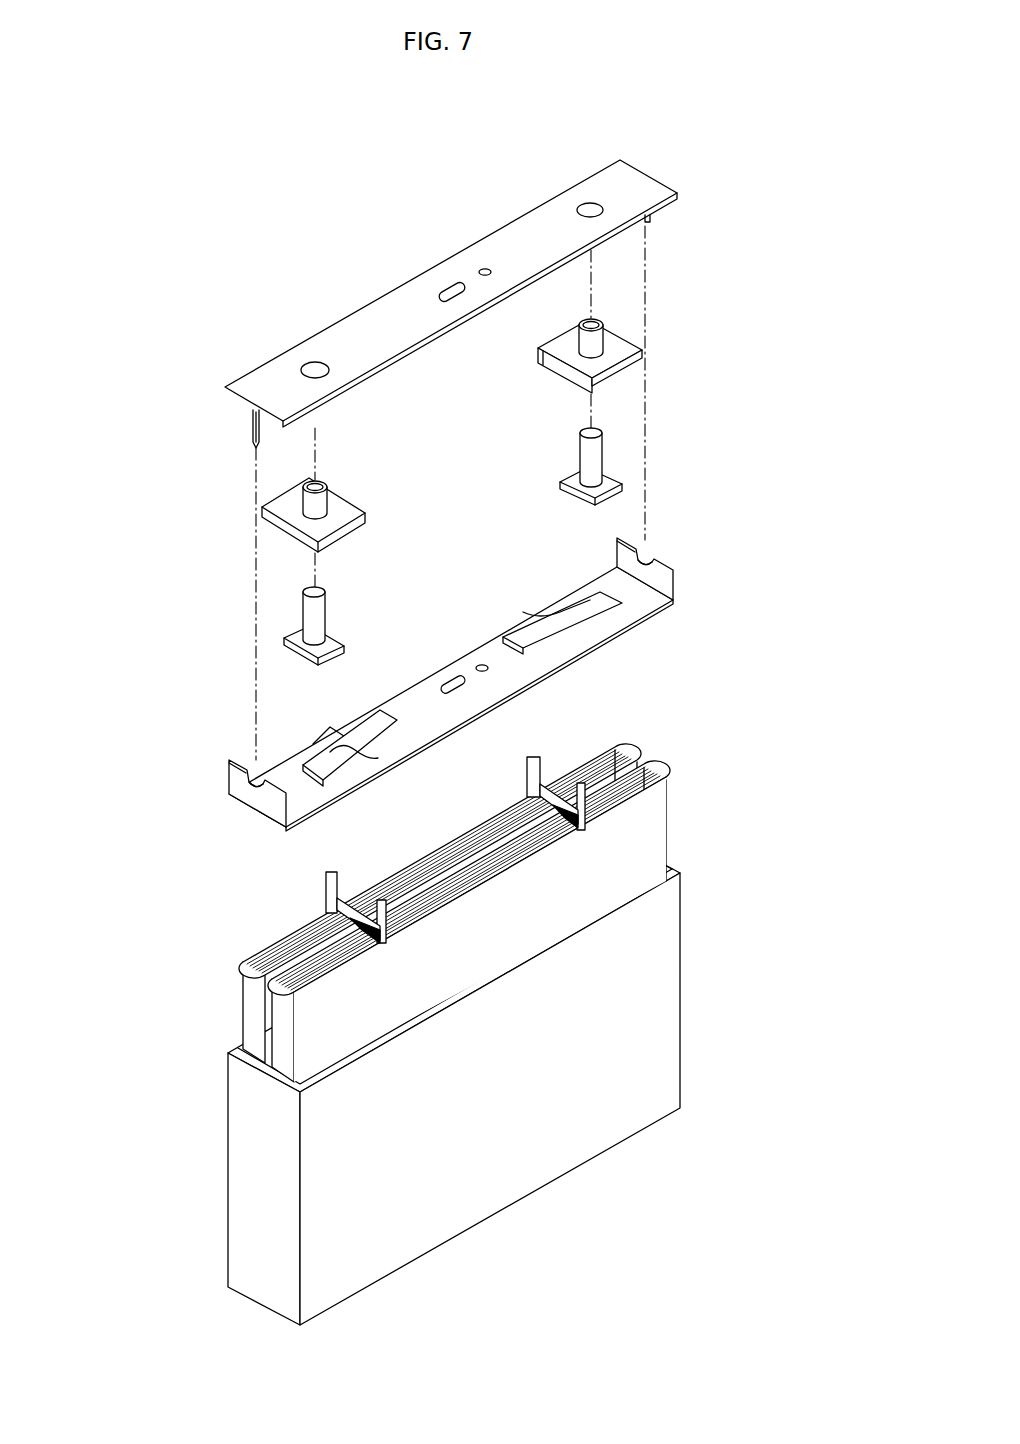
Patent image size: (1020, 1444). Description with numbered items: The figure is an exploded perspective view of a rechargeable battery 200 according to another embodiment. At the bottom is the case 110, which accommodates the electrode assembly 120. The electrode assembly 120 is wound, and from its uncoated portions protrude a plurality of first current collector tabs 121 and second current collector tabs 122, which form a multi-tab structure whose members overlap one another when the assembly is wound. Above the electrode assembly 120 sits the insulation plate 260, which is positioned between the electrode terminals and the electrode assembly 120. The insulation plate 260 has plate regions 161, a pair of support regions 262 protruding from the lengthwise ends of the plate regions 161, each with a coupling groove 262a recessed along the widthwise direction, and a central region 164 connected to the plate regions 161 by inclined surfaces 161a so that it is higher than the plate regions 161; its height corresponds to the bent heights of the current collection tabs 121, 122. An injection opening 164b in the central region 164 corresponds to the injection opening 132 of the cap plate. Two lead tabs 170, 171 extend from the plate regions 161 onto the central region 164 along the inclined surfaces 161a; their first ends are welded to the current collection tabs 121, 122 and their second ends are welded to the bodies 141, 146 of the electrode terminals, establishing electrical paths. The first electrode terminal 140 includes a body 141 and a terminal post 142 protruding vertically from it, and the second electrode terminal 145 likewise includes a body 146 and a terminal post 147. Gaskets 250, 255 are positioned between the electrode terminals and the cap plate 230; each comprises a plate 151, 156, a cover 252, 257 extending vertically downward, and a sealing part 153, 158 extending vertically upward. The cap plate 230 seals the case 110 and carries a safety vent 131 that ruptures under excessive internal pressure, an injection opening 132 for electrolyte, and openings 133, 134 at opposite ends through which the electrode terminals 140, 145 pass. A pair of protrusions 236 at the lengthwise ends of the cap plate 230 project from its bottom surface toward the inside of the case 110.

The rechargeable battery 200 is at (712, 147).
The case 110 is at (236, 1170).
The electrode assembly 120 is at (282, 1003).
The first current collector tab 121 is at (383, 905).
The second current collector tab 122 is at (578, 787).
The cap plate 230 is at (447, 290).
The safety vent 131 is at (450, 286).
The injection opening 132 is at (484, 268).
The opening 133 is at (312, 362).
The opening 134 is at (590, 203).
The protrusion 236 is at (253, 420).
The first electrode terminal 140 is at (301, 628).
The body 141 is at (296, 638).
The terminal post 142 is at (325, 596).
The second electrode terminal 145 is at (551, 460).
The body 146 is at (561, 483).
The terminal post 147 is at (583, 430).
The gasket 250 is at (316, 484).
The plate 151 is at (352, 505).
The cover 252 is at (366, 514).
The sealing part 153 is at (320, 483).
The gasket 255 is at (586, 341).
The plate 156 is at (553, 348).
The cover 257 is at (592, 384).
The sealing part 158 is at (585, 322).
The insulation plate 260 is at (439, 703).
The support region 262 is at (675, 580).
The coupling groove 262a is at (652, 553).
The central region 164 is at (512, 677).
The injection opening 164b is at (480, 665).
The plate region 161 is at (321, 815).
The inclined surface 161a is at (327, 738).
The lead tab 170 is at (330, 767).
The lead tab 171 is at (533, 631).